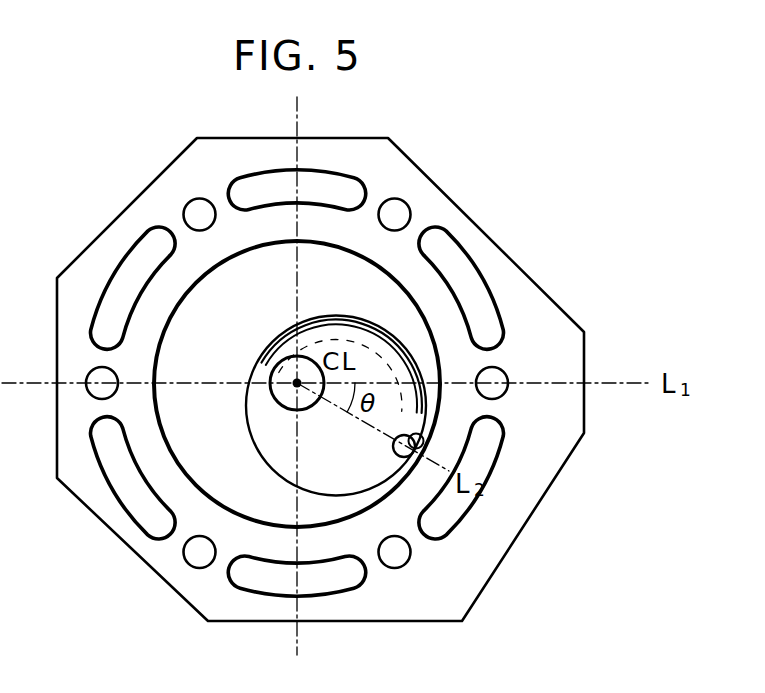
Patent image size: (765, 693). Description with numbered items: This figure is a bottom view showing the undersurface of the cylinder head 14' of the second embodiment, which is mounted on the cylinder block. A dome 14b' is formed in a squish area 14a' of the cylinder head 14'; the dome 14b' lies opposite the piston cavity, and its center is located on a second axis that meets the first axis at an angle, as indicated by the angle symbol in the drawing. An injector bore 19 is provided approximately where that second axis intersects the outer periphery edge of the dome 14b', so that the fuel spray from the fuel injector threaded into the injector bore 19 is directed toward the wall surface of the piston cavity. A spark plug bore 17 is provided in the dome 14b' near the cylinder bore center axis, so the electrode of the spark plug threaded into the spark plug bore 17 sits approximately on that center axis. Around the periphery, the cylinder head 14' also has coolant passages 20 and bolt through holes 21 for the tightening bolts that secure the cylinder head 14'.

The cylinder head 14' is at (341, 379).
The squish area 14a' is at (328, 395).
The dome 14b' is at (300, 406).
The spark plug bore 17 is at (278, 366).
The injector bore 19 is at (421, 430).
The coolant passages 20 is at (333, 187).
The bolt through holes 21 is at (195, 211).